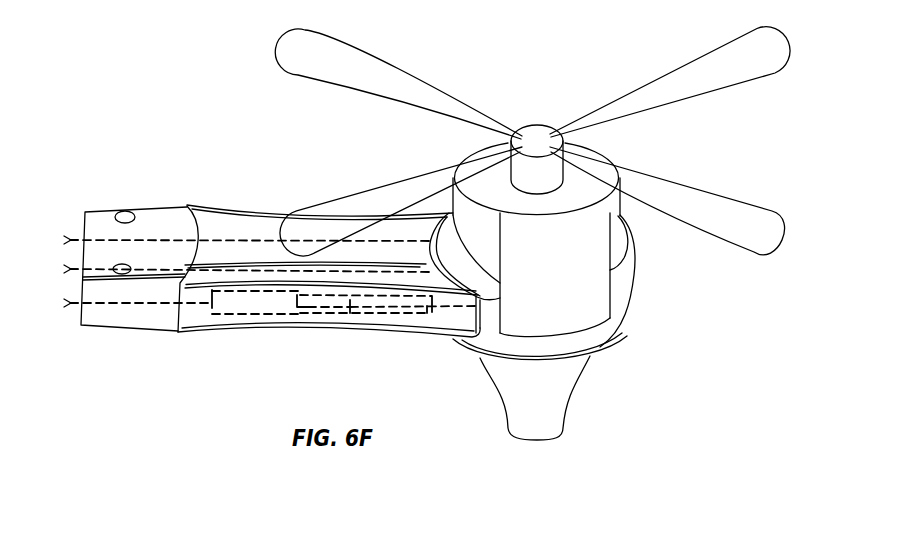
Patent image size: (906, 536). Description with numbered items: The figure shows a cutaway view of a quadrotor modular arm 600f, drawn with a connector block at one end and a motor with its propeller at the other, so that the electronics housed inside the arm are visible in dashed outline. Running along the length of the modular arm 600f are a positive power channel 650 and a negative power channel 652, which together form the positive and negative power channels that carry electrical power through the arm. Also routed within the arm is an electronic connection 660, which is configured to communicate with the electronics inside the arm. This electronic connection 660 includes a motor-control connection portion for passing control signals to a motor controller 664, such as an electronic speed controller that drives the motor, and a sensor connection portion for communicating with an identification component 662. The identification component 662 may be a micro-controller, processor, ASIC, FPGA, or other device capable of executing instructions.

The modular arm 600f is at (117, 142).
The positive power channel 650 is at (162, 271).
The negative power channel 652 is at (268, 270).
The electronic connection 660 is at (189, 303).
The identification component 662 is at (268, 303).
The motor controller 664 is at (390, 310).